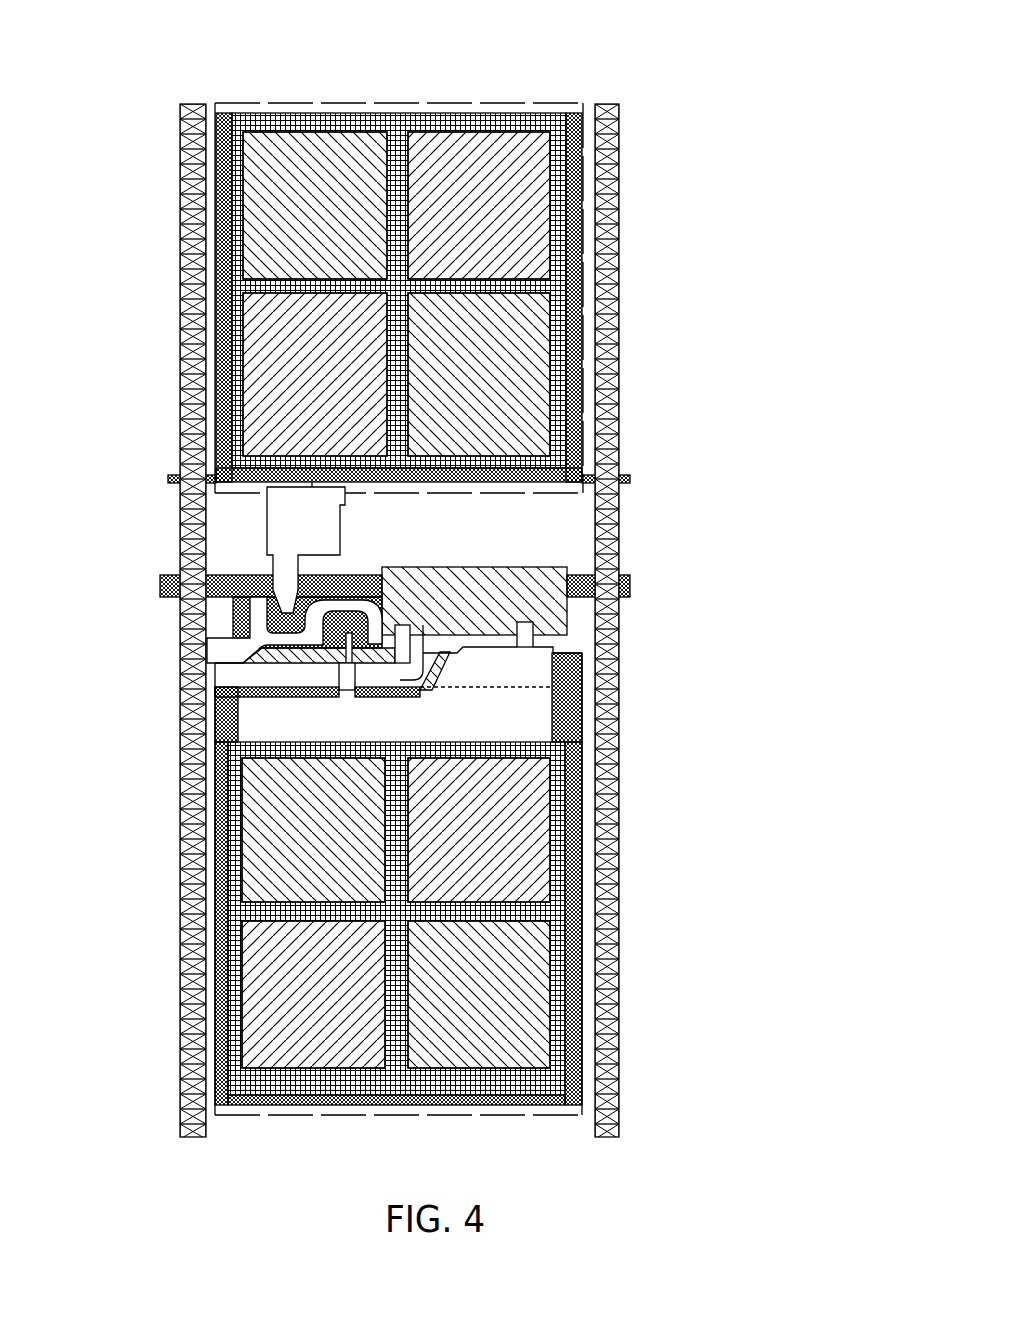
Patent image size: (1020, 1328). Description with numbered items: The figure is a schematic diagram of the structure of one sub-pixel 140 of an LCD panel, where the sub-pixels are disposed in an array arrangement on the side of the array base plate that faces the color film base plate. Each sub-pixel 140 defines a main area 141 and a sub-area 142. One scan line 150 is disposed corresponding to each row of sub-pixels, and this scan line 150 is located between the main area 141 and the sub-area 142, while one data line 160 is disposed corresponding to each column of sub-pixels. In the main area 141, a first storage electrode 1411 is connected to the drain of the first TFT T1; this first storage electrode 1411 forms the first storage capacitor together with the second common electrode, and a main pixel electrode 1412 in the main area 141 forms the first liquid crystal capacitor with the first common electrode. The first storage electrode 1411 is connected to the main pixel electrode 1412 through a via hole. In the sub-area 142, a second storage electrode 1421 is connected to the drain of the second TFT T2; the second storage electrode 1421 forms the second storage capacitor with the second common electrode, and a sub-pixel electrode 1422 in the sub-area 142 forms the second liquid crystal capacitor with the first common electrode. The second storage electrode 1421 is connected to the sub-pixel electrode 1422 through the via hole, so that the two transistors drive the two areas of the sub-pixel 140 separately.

The sub-pixel 140 is at (479, 256).
The main area 141 is at (447, 103).
The main pixel electrode 1412 is at (522, 385).
The first storage electrode 1411 is at (283, 522).
The data line 160 is at (193, 355).
The scan line 150 is at (170, 588).
The first TFT T1 is at (233, 618).
The second TFT T2 is at (543, 603).
The second storage electrode 1421 is at (522, 673).
The sub-area 142 is at (480, 1117).
The sub-pixel electrode 1422 is at (522, 893).